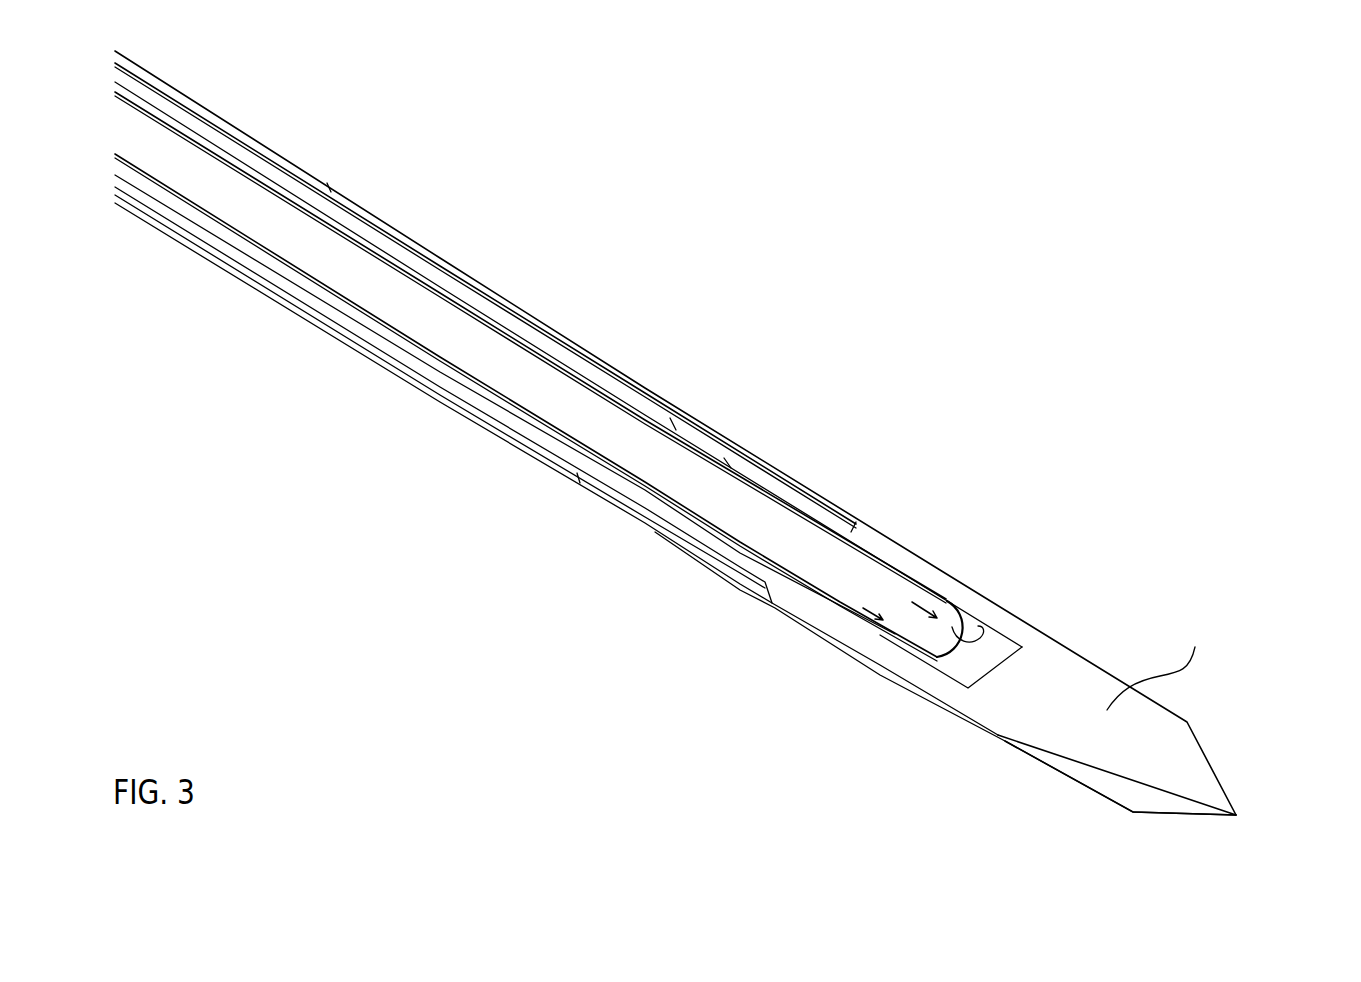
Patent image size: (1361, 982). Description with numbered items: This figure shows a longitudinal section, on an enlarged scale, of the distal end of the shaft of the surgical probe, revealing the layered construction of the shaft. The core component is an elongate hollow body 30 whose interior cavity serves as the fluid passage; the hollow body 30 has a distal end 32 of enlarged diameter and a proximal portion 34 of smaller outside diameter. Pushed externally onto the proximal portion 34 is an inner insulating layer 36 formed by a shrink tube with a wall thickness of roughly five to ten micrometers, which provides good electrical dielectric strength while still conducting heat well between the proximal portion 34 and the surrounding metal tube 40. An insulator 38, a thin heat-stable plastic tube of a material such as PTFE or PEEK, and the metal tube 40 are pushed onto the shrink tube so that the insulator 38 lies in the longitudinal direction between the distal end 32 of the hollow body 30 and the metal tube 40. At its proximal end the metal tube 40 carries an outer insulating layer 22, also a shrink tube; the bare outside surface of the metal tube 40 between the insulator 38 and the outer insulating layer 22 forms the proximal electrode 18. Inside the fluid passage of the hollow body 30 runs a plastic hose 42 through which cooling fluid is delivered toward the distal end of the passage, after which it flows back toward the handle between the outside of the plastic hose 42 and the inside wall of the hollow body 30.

The proximal electrode 18 is at (582, 343).
The outer insulating layer 22 is at (248, 133).
The hollow body 30 is at (940, 570).
The distal end 32 is at (1030, 622).
The proximal portion 34 is at (673, 423).
The inner insulating layer 36 is at (657, 532).
The insulator 38 is at (813, 495).
The metal tube 40 is at (480, 285).
The plastic hose 42 is at (727, 462).